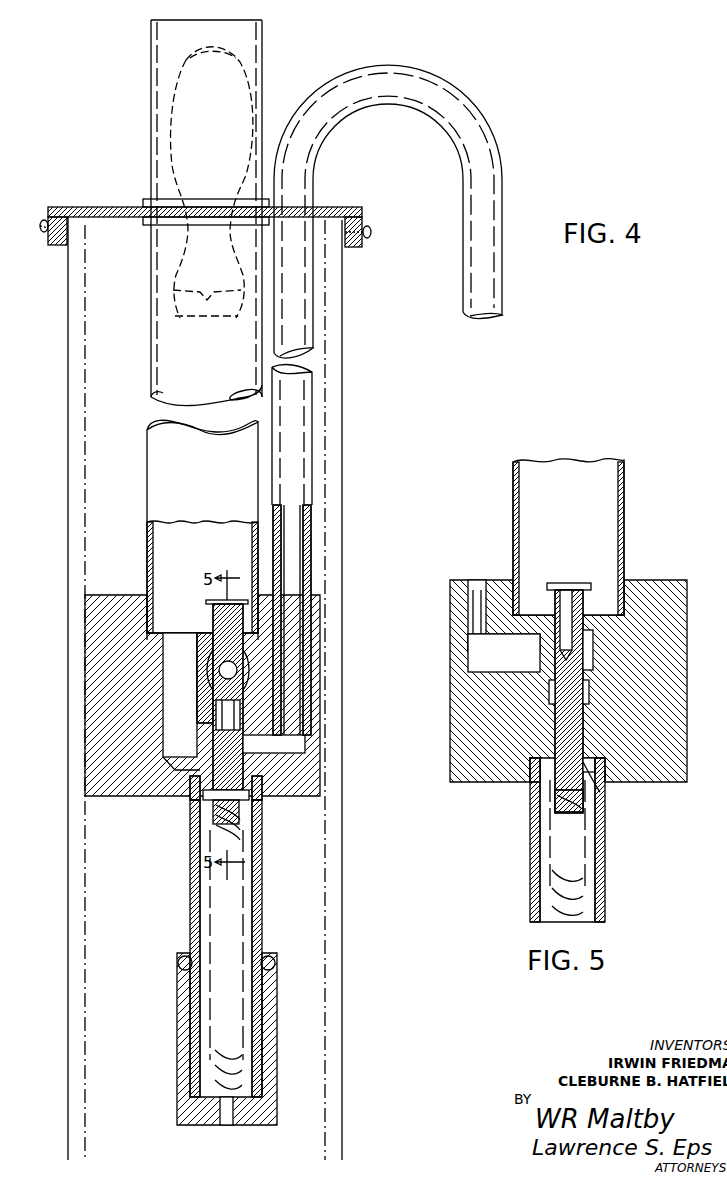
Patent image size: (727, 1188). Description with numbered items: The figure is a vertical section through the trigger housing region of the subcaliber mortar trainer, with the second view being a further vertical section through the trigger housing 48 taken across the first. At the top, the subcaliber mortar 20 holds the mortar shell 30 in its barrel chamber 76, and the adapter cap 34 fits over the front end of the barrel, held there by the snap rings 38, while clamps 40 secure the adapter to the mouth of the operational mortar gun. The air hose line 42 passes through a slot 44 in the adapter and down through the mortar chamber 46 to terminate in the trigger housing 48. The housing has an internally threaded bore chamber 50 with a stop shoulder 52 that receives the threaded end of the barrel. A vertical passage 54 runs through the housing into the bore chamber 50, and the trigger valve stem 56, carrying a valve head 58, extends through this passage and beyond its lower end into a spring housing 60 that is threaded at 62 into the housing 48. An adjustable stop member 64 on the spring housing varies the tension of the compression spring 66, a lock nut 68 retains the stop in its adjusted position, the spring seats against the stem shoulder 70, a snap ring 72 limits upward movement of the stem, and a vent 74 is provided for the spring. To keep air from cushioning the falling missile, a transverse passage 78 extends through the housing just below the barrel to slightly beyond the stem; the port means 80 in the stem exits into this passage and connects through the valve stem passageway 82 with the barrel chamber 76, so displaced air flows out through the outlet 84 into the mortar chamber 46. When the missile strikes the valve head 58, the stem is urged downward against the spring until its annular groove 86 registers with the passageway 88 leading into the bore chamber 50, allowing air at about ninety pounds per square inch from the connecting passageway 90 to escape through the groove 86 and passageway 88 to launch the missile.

In FIG. 4, the subcaliber mortar 20 is at (151, 104).
In FIG. 4, the mortar shell 30 is at (225, 81).
In FIG. 4, the adapter cap 34 is at (355, 218).
In FIG. 4, the snap rings 38 is at (195, 225).
In FIG. 4, the clamps 40 is at (42, 232).
In FIG. 4, the air hose line 42 is at (494, 140).
In FIG. 4, the slot 44 is at (316, 207).
In FIG. 4, the mortar chamber 46 is at (130, 494).
In FIG. 4, the trigger housing body member 48 is at (112, 707).
In FIG. 4, the bore chamber 50 is at (150, 606).
In FIG. 5, the bore chamber 50 is at (622, 592).
In FIG. 4, the stop shoulder 52 is at (157, 624).
In FIG. 4, the passage 54 is at (216, 719).
In FIG. 5, the trigger valve stem 56 is at (572, 720).
In FIG. 5, the valve head 58 is at (584, 588).
In FIG. 4, the spring housing 60 is at (190, 903).
In FIG. 5, the spring housing 60 is at (605, 874).
In FIG. 4, the threaded connection 62 is at (193, 786).
In FIG. 5, the threaded connection 62 is at (618, 777).
In FIG. 4, the adjustable stop member 64 is at (182, 1067).
In FIG. 5, the adjustable stop member 64 is at (540, 770).
In FIG. 4, the compression spring 66 is at (235, 822).
In FIG. 5, the compression spring 66 is at (558, 792).
In FIG. 4, the lock nut 68 is at (183, 960).
In FIG. 5, the stem shoulder 70 is at (600, 790).
In FIG. 5, the snap ring 72 is at (587, 760).
In FIG. 4, the vent 74 is at (227, 1112).
In FIG. 4, the barrel chamber 76 is at (224, 560).
In FIG. 5, the barrel chamber 76 is at (586, 509).
In FIG. 4, the transverse passage 78 is at (208, 660).
In FIG. 5, the transverse passage 78 is at (534, 664).
In FIG. 4, the port means 80 is at (222, 664).
In FIG. 5, the port means 80 is at (590, 645).
In FIG. 5, the valve stem passageway 82 is at (569, 592).
In FIG. 5, the outlet 84 is at (480, 590).
In FIG. 5, the annular groove 86 is at (584, 692).
In FIG. 4, the passageway 88 is at (198, 692).
In FIG. 4, the connecting passageway 90 is at (290, 745).